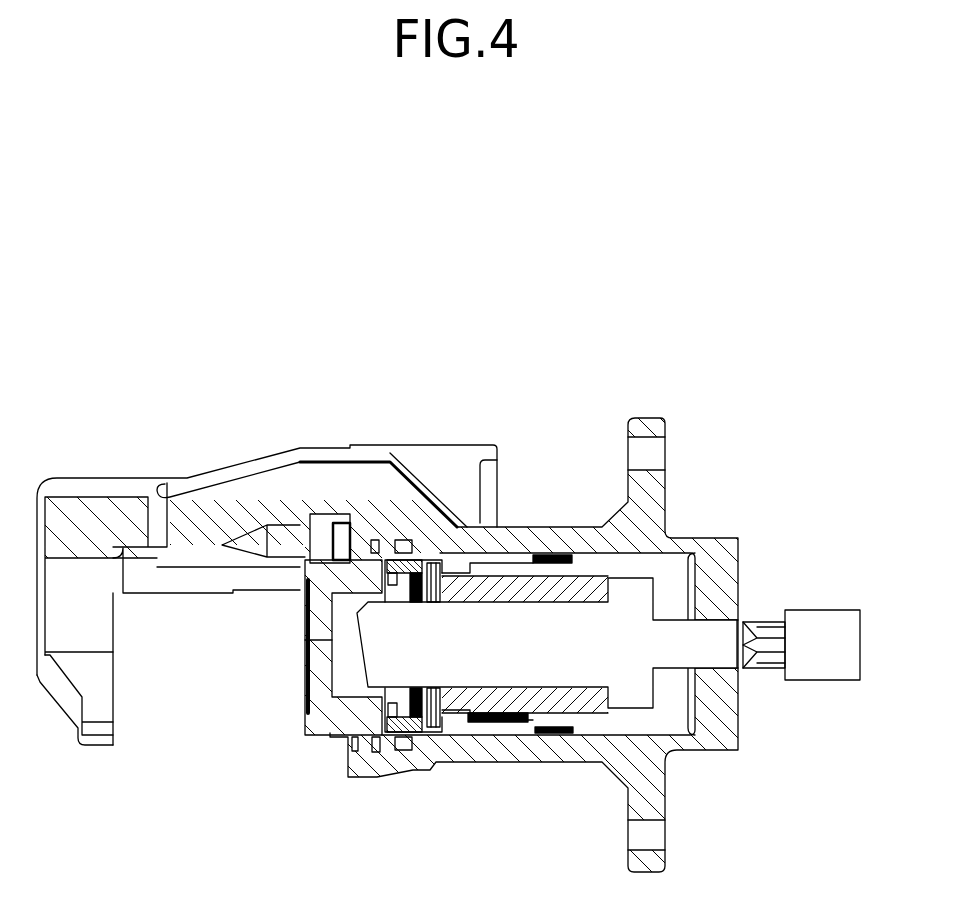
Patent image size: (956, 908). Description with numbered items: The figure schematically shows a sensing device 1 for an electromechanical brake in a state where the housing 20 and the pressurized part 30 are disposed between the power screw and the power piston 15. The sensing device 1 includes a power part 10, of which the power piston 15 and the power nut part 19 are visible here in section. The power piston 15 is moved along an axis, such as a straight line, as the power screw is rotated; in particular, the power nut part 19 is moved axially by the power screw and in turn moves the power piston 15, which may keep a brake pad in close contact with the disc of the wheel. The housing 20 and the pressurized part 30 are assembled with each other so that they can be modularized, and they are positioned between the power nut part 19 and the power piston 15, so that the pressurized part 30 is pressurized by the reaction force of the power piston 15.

The sensing device 1 is at (826, 280).
The power part 10 is at (540, 763).
The power piston 15 is at (313, 722).
The power nut part 19 is at (478, 703).
The housing 20 is at (418, 557).
The pressurized part 30 is at (388, 552).